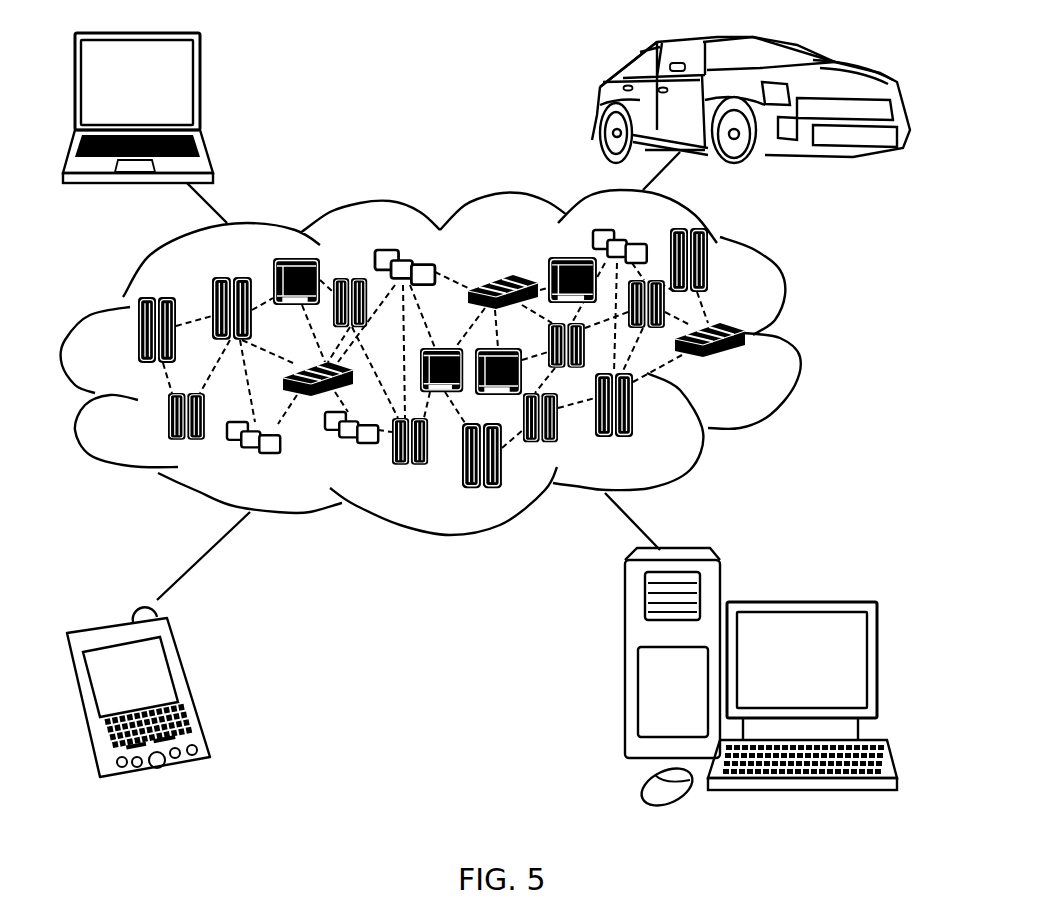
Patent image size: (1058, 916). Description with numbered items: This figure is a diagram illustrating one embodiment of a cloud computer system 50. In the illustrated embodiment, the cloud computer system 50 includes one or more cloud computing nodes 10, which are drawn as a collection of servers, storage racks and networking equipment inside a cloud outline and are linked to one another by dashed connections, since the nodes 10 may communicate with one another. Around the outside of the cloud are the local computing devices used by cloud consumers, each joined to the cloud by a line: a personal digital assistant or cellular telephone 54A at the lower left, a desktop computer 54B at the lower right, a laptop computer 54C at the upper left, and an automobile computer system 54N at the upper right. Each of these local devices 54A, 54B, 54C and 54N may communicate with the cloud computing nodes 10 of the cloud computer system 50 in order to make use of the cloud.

The cloud computing node 10 is at (748, 369).
The cloud computer system 50 is at (456, 362).
The personal digital assistant (PDA) or cellular telephone 54A is at (198, 690).
The desktop computer 54B is at (800, 602).
The laptop computer 54C is at (203, 90).
The automobile computer system 54N is at (600, 104).